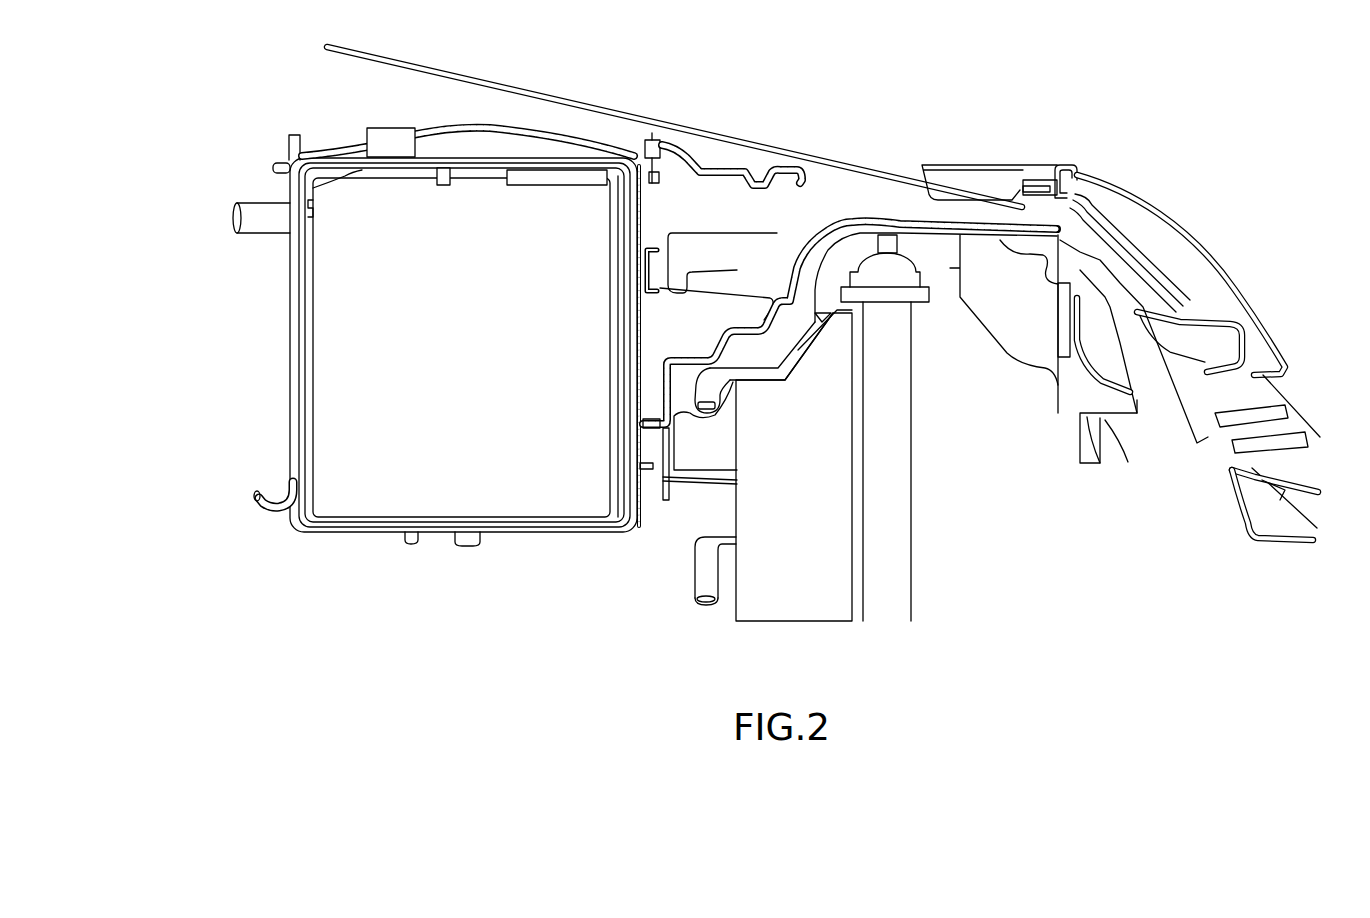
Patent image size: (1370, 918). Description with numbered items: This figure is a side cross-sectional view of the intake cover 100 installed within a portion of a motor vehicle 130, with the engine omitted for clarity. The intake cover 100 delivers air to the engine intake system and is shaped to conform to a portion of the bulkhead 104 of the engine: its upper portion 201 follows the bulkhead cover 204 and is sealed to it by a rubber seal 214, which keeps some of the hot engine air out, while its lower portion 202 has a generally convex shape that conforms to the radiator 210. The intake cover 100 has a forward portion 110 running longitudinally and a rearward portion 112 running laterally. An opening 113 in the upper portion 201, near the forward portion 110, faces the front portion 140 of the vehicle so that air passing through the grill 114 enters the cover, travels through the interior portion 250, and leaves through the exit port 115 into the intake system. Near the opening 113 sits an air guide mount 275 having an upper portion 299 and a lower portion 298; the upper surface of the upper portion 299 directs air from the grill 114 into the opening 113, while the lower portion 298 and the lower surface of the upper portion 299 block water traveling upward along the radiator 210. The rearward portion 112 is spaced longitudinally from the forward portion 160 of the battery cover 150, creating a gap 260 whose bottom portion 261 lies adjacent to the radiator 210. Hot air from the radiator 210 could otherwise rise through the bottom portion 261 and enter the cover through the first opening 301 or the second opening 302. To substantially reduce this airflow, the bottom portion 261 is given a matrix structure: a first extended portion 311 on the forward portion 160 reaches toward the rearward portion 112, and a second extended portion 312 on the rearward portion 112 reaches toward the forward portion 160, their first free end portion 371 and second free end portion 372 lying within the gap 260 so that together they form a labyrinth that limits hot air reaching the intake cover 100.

The intake cover 100 is at (720, 161).
The bulkhead 104 is at (983, 265).
The forward portion 110 is at (1075, 195).
The rearward portion 112 is at (663, 400).
The opening 113 is at (812, 197).
The grill 114 is at (1296, 420).
The exit port 115 is at (738, 272).
The motor vehicle 130 is at (1166, 175).
The front portion 140 is at (1240, 285).
The battery cover 150 is at (240, 352).
The forward portion 160 is at (637, 297).
The upper portion 201 is at (743, 180).
The lower portion 202 is at (753, 391).
The bulkhead cover 204 is at (823, 165).
The radiator 210 is at (815, 622).
The rubber seal 214 is at (655, 132).
The interior portion 250 is at (727, 218).
The gap 260 is at (648, 510).
The bottom portion 261 is at (666, 505).
The air guide mount 275 is at (1147, 402).
The lower portion 298 is at (1115, 425).
The upper portion 299 is at (1087, 347).
The first opening 301 is at (648, 207).
The second opening 302 is at (650, 311).
The first extended portion 311 is at (650, 467).
The second extended portion 312 is at (663, 430).
The first free end portion 371 is at (737, 481).
The second free end portion 372 is at (640, 420).